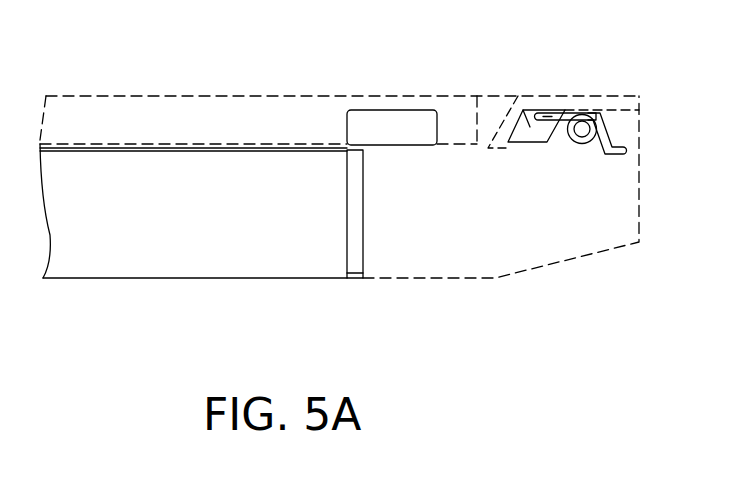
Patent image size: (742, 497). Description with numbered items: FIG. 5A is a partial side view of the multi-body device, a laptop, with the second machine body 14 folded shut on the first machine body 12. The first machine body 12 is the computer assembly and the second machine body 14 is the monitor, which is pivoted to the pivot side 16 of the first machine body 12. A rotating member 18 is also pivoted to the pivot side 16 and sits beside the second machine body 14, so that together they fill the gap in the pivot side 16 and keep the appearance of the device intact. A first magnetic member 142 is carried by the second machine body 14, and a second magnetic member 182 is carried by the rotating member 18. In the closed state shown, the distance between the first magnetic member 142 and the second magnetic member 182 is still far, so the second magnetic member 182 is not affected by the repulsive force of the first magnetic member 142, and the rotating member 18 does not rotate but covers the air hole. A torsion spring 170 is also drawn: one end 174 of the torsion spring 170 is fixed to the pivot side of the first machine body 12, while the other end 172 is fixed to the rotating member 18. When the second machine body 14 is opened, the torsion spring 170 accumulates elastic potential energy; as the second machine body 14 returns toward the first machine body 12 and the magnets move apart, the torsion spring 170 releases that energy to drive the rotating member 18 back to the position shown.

The first machine body 12 is at (302, 262).
The second machine body 14 is at (292, 107).
The first magnetic member 142 is at (392, 126).
The pivot side 16 is at (615, 310).
The rotating member 18 is at (605, 103).
The second magnetic member 182 is at (523, 109).
The other end of torsion spring 172 is at (549, 111).
The one end of torsion spring 174 is at (618, 146).
The torsion spring 170 is at (583, 144).